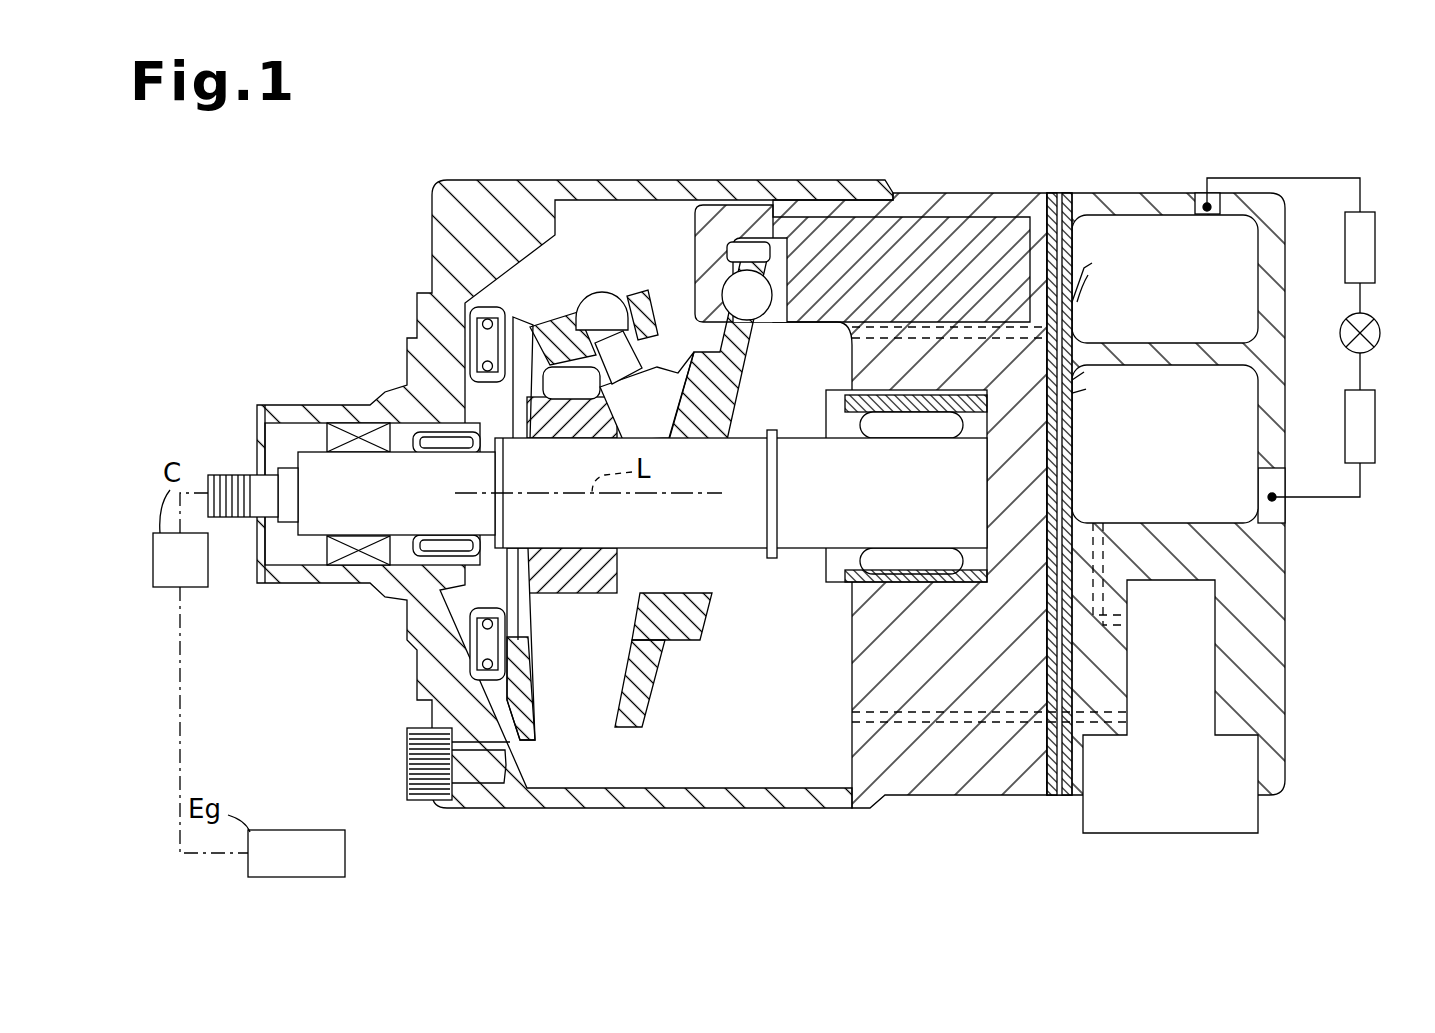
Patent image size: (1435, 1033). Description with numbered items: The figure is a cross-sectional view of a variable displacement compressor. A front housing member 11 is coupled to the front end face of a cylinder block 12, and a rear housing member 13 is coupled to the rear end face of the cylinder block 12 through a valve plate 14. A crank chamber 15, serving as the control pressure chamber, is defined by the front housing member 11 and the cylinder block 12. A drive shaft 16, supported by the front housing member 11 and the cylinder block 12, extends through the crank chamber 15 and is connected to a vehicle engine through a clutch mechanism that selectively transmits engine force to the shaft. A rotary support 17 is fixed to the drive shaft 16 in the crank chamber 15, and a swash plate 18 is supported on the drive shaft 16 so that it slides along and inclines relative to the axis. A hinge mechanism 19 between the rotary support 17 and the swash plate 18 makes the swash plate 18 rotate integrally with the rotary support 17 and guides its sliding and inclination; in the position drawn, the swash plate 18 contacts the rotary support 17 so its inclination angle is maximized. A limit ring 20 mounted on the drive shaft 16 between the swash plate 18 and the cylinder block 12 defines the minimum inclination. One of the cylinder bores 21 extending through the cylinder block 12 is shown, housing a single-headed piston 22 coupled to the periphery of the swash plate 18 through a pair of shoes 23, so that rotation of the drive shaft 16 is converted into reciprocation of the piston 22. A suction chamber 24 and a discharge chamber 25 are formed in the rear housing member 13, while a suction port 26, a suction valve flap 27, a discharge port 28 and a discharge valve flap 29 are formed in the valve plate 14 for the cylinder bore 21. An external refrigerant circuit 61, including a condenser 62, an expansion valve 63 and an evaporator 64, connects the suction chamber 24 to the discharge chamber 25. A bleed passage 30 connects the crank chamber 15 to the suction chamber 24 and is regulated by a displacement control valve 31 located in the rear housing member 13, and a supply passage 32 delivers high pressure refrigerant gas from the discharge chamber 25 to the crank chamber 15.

The front housing member 11 is at (735, 809).
The cylinder block 12 is at (955, 797).
The rear housing member 13 is at (1287, 292).
The valve plate 14 is at (1055, 796).
The crank chamber 15 is at (762, 714).
The drive shaft 16 is at (722, 549).
The rotary support 17 is at (540, 735).
The swash plate 18 is at (648, 728).
The hinge mechanism 19 is at (596, 284).
The limit ring 20 is at (772, 559).
The cylinder bore 21 is at (942, 218).
The single-headed piston 22 is at (828, 208).
The shoes 23 is at (768, 265).
The suction chamber 24 is at (1202, 447).
The discharge chamber 25 is at (1212, 292).
The suction port 26 is at (1076, 396).
The suction valve flap 27 is at (1078, 378).
The discharge port 28 is at (1080, 290).
The discharge valve flap 29 is at (1085, 268).
The bleed passage 30 is at (1118, 542).
The displacement control valve 31 is at (1187, 729).
The supply passage 32 is at (868, 340).
The external refrigerant circuit 61 is at (1318, 178).
The condenser 62 is at (1362, 212).
The expansion valve 63 is at (1372, 318).
The evaporator 64 is at (1377, 395).